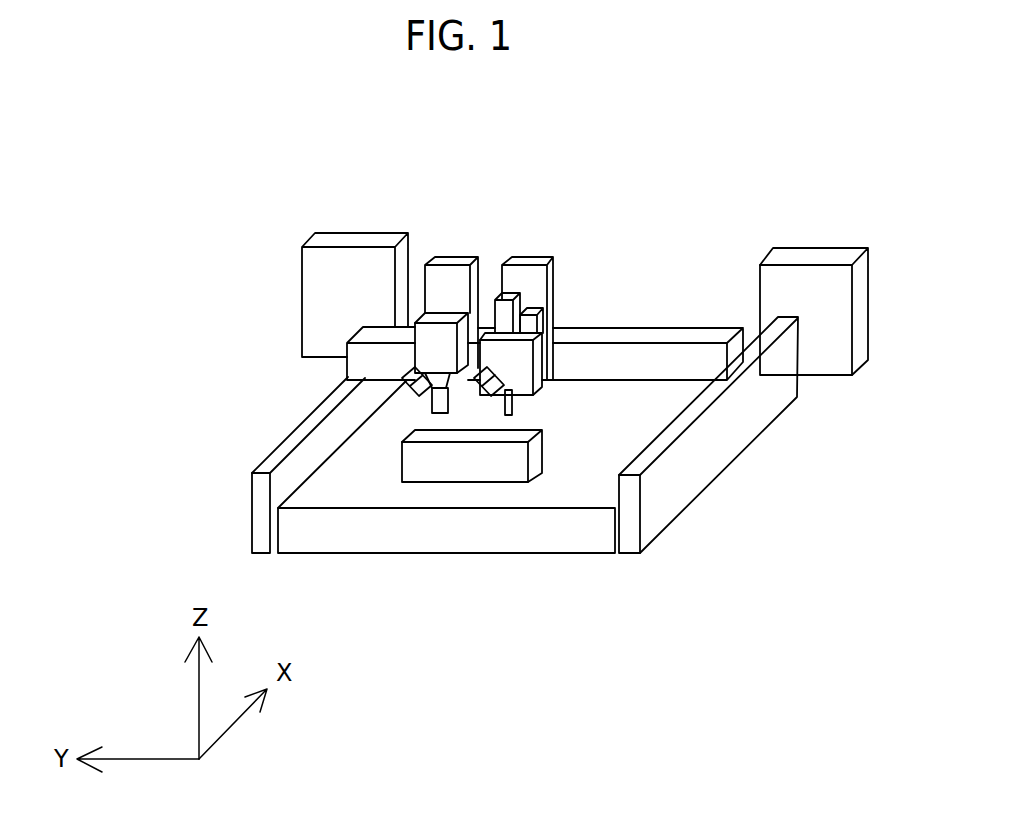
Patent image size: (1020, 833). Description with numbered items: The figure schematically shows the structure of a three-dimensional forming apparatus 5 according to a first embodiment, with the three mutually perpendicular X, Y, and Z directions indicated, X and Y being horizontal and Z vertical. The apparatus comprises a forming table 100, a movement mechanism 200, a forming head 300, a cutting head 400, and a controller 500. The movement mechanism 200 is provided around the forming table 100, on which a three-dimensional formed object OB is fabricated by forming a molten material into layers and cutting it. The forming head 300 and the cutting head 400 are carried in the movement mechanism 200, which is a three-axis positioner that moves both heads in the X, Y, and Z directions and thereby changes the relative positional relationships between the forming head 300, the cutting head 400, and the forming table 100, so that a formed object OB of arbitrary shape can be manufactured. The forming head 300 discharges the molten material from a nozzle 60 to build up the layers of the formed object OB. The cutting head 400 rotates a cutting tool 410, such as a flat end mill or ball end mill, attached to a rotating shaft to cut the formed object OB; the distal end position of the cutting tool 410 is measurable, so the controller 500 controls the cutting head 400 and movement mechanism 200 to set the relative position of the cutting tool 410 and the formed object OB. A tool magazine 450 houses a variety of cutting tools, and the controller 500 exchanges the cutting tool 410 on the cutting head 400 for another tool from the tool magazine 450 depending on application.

The three-dimensional forming apparatus 5 is at (795, 150).
The forming table 100 is at (583, 553).
The movement mechanism 200 is at (295, 428).
The forming head 300 is at (528, 257).
The cutting head 400 is at (452, 257).
The cutting tool 410 is at (438, 413).
The tool magazine 450 is at (361, 233).
The controller 500 is at (823, 248).
The nozzle 60 is at (505, 413).
The three-dimensional formed object OB is at (548, 442).